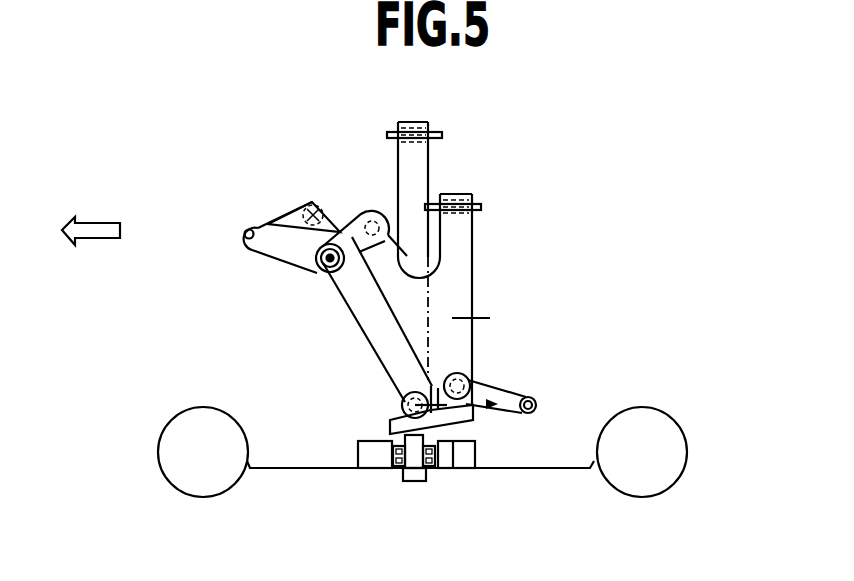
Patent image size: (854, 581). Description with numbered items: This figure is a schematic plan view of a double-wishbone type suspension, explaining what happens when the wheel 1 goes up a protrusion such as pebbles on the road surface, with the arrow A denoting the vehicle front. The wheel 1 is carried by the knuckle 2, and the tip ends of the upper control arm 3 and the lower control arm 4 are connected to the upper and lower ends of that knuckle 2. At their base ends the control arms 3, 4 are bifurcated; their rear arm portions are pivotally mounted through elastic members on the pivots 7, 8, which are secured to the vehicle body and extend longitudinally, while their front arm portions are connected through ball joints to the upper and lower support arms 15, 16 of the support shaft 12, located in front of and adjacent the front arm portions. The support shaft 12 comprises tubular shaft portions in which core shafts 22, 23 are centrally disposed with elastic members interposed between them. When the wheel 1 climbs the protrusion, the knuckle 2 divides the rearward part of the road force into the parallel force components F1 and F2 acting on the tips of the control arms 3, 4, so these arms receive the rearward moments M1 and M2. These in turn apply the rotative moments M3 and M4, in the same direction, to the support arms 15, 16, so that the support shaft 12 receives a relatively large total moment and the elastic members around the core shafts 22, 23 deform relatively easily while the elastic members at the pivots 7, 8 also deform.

The wheel 1 is at (203, 497).
The knuckle 2 is at (453, 470).
The upper control arm 3 is at (472, 243).
The lower control arm 4 is at (372, 342).
The pivot 7 is at (479, 204).
The pivot 8 is at (437, 132).
The support shaft 12 is at (287, 258).
The upper support arm 15 is at (353, 215).
The lower support arm 16 is at (289, 209).
The core shaft 22 is at (323, 272).
The core shaft 23 is at (250, 243).
The moment M1 is at (506, 308).
The moment M2 is at (465, 353).
The rotative moment M3 is at (372, 268).
The rotative moment M4 is at (322, 205).
The force component F1 is at (545, 386).
The force component F2 is at (470, 425).
The vehicle front A is at (98, 238).